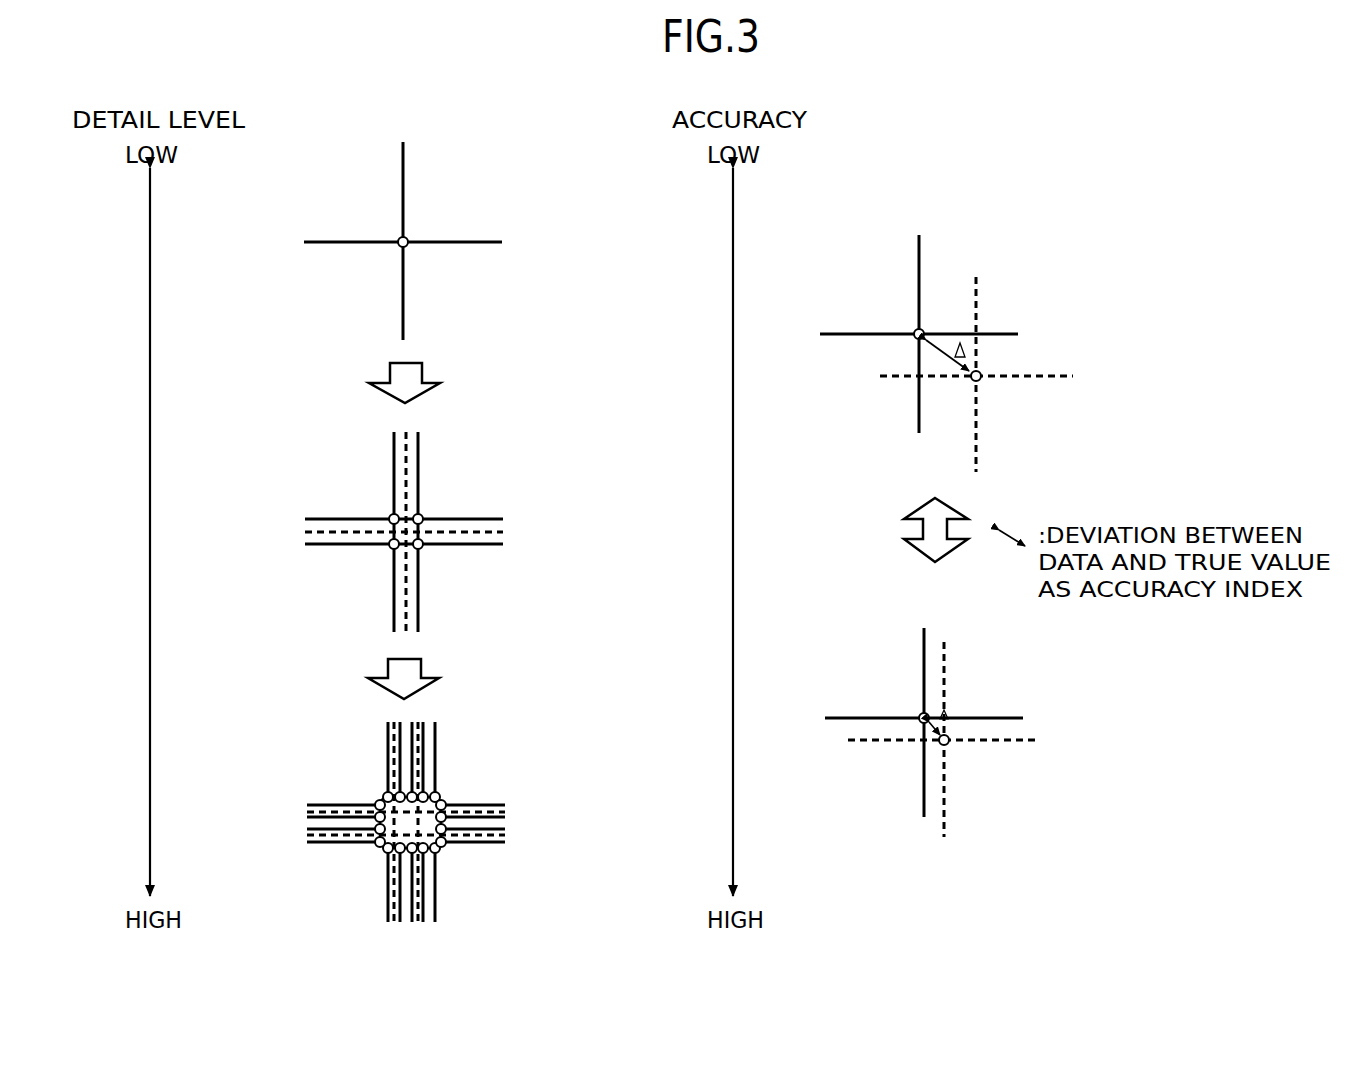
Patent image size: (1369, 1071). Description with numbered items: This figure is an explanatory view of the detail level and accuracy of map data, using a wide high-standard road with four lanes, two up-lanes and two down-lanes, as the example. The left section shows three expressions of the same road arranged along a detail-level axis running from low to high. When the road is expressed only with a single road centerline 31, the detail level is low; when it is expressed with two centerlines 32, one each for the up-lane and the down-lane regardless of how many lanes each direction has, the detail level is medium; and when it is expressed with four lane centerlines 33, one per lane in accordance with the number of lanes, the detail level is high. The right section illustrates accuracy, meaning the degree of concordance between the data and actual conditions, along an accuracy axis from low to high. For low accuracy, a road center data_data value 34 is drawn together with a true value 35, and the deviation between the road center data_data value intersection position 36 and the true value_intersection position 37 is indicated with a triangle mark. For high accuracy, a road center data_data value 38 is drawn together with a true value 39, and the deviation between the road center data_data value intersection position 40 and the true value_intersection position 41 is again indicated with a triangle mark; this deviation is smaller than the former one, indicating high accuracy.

The single road centerline 31 is at (480, 241).
The two centerlines 32 is at (490, 518).
The four lane centerlines 33 is at (493, 803).
The road center data_data value 34 is at (830, 334).
The true value 35 is at (1073, 376).
The road center data_data value intersection position 36 is at (926, 330).
The true value_intersection position 37 is at (983, 372).
The road center data_data value 38 is at (830, 718).
The true value 39 is at (1040, 740).
The road center data_data value intersection position 40 is at (930, 714).
The true value_intersection position 41 is at (948, 745).